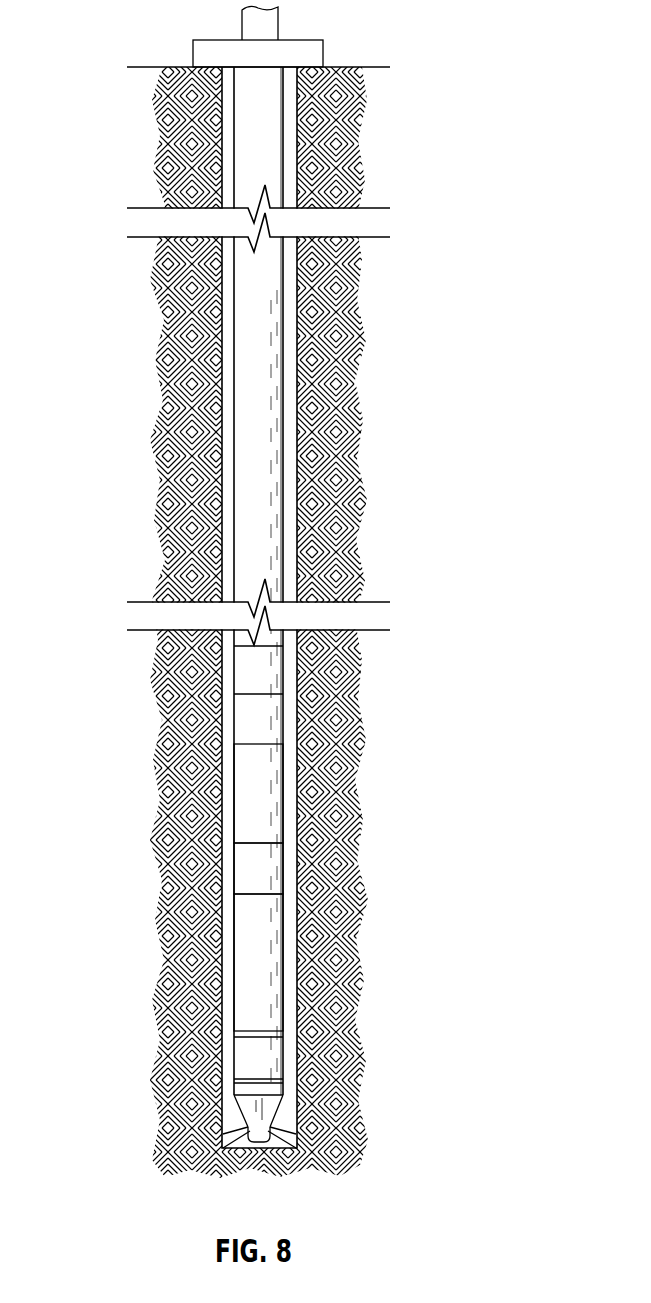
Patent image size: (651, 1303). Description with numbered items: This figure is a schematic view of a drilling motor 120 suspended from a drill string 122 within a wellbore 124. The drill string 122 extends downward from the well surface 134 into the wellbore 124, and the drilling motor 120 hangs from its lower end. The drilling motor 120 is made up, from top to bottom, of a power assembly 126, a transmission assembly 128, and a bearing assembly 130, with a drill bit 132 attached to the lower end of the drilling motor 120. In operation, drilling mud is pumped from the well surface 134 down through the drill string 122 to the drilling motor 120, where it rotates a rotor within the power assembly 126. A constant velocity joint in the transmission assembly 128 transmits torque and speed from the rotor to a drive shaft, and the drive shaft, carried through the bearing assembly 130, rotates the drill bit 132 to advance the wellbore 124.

The drilling motor 120 is at (402, 772).
The drill string 122 is at (273, 170).
The wellbore 124 is at (292, 1054).
The power assembly 126 is at (245, 782).
The transmission assembly 128 is at (245, 887).
The bearing assembly 130 is at (272, 920).
The drill bit 132 is at (235, 1123).
The well surface 134 is at (297, 43).